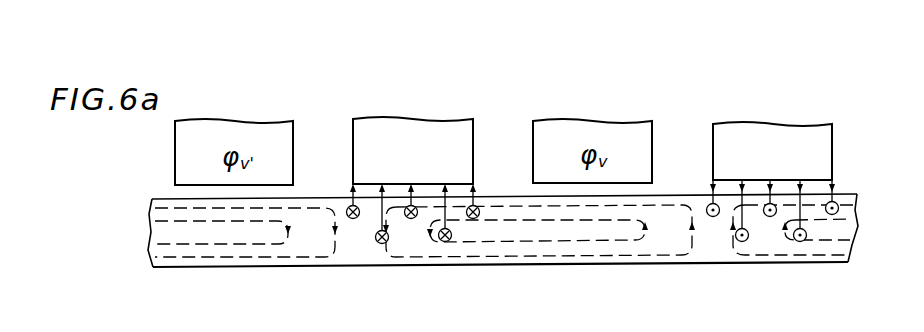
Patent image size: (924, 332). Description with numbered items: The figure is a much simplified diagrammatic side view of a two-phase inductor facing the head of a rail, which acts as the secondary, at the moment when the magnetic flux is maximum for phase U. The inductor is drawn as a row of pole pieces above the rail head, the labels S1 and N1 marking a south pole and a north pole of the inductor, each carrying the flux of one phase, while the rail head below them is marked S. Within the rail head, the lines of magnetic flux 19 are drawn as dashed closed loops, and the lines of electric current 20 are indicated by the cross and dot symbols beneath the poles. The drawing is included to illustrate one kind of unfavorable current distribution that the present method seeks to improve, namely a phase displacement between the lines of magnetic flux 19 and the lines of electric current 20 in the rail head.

The lines of magnetic flux 19 is at (359, 226).
The lines of electric current 20 is at (559, 257).
The magnetic strip S is at (849, 183).
The south pole S1 is at (428, 146).
The north pole N1 is at (789, 147).